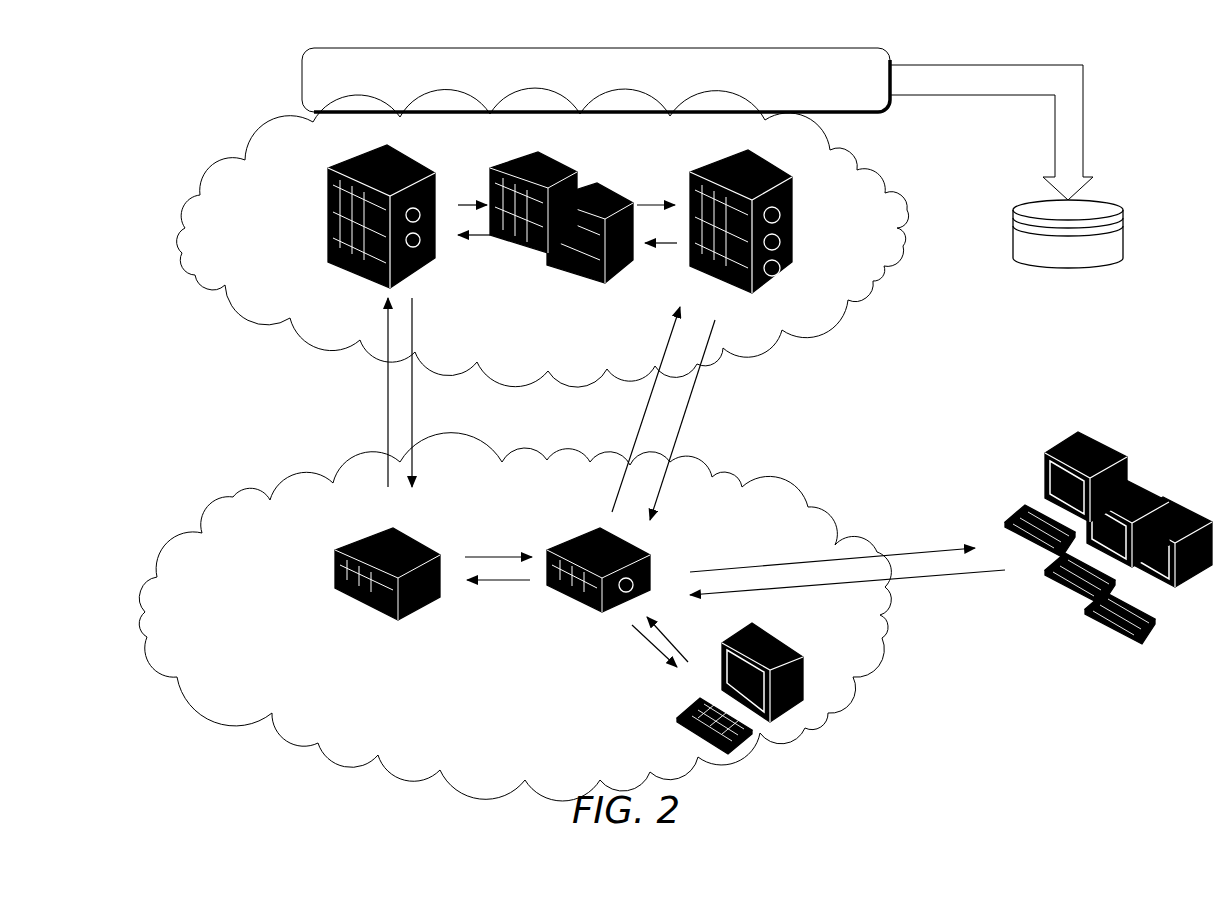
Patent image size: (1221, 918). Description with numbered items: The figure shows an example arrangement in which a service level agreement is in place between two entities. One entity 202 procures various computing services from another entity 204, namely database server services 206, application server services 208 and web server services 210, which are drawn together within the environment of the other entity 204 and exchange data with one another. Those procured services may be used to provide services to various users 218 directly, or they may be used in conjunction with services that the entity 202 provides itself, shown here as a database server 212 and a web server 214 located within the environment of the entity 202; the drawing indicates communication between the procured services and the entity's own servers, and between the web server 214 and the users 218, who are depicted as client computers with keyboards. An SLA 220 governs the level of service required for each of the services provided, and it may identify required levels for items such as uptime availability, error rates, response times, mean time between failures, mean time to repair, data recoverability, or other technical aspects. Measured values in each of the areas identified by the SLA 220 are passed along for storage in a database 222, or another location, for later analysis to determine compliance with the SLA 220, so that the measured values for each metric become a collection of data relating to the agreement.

The entity 202 is at (242, 510).
The another entity 204 is at (233, 178).
The database server services 206 is at (363, 187).
The application server services 208 is at (535, 168).
The web server services 210 is at (742, 172).
The database server 212 is at (375, 553).
The web server 214 is at (588, 548).
The users 218 is at (685, 716).
The SLA 220 is at (834, 62).
The database 222 is at (1086, 211).